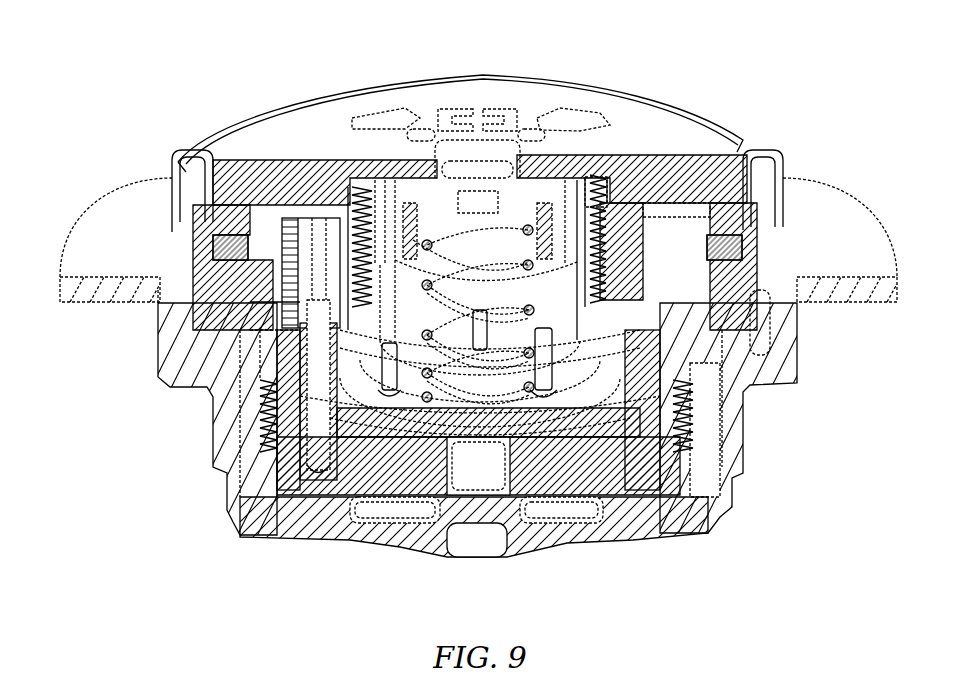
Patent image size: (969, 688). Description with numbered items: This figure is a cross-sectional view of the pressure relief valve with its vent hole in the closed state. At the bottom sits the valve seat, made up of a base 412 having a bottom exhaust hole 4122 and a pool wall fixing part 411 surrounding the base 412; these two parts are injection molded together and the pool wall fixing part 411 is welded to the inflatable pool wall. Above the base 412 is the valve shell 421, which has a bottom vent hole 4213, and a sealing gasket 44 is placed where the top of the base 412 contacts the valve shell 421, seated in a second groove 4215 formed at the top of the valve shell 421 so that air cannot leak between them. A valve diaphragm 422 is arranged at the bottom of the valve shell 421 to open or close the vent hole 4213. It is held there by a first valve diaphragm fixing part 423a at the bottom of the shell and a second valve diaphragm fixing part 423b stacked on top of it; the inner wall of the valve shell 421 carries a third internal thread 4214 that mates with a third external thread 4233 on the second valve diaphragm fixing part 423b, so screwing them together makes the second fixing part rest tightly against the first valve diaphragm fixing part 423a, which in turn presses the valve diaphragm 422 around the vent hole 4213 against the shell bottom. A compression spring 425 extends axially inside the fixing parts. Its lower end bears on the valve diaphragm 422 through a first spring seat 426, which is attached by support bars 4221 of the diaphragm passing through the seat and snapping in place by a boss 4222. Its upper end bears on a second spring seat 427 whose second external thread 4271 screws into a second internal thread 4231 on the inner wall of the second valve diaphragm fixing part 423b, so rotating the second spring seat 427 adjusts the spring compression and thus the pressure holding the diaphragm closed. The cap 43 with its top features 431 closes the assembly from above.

The cap 43 is at (413, 110).
The cap top features 431 is at (497, 112).
The second internal thread 4231 is at (350, 270).
The compression spring 425 is at (473, 277).
The second spring seat 427 is at (543, 213).
The second external thread 4271 is at (590, 260).
The second valve diaphragm fixing part 423b is at (290, 235).
The second groove 4215 is at (212, 245).
The third external thread 4233 is at (282, 270).
The third internal thread 4214 is at (272, 302).
The valve shell 421 is at (267, 363).
The first valve diaphragm fixing part 423a is at (317, 385).
The pool wall fixing part 411 is at (230, 427).
The base 412 is at (260, 483).
The vent hole 4213 is at (390, 440).
The bottom exhaust hole 4122 is at (565, 513).
The sealing gasket 44 is at (732, 247).
The support bar 4221 is at (547, 347).
The boss 4222 is at (430, 357).
The first spring seat 426 is at (613, 417).
The valve diaphragm 422 is at (653, 470).